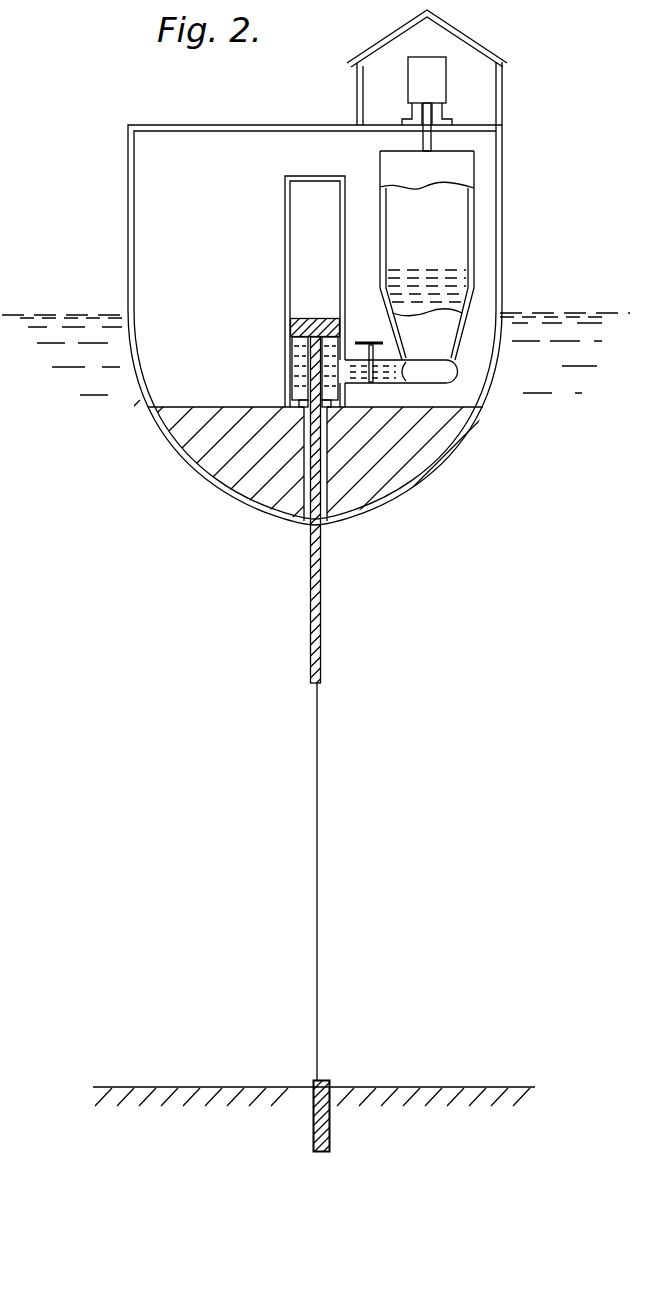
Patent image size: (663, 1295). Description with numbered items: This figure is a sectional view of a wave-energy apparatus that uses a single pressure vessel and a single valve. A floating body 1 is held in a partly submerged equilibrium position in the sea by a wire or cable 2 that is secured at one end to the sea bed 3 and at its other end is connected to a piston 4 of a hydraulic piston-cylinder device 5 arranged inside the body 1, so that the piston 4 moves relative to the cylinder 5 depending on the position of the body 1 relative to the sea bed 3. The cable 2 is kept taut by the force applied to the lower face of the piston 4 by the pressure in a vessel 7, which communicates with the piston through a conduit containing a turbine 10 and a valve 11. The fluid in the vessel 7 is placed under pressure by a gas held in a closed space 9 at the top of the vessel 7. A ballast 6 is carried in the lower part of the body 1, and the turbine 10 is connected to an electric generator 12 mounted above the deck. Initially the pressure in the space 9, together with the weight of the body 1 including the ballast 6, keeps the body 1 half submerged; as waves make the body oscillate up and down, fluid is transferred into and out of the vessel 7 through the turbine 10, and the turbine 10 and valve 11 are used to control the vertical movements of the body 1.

The floating body 1 is at (178, 455).
The wire or cable 2 is at (320, 763).
The sea bed 3 is at (222, 1085).
The piston 4 is at (300, 326).
The hydraulic piston-cylinder device 5 is at (285, 250).
The ballast 6 is at (425, 457).
The vessel 7 is at (474, 240).
The closed space 9 is at (456, 216).
The turbine 10 is at (452, 372).
The valve 11 is at (372, 343).
The electric generator 12 is at (428, 82).